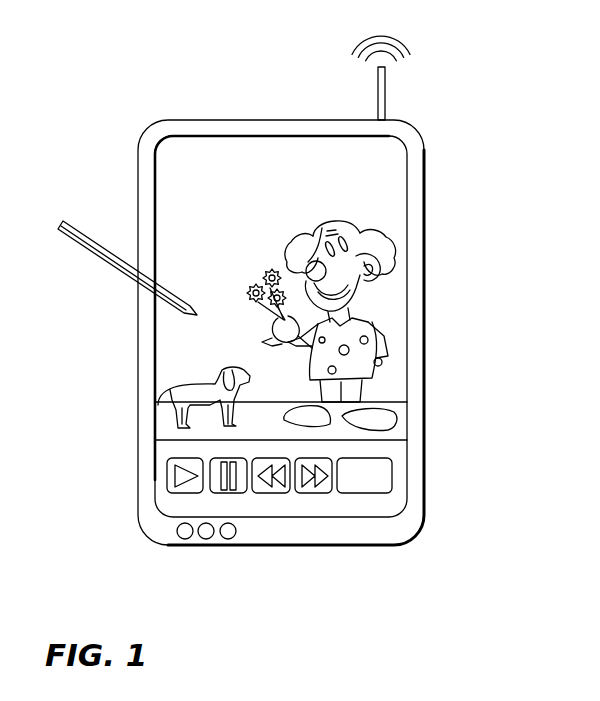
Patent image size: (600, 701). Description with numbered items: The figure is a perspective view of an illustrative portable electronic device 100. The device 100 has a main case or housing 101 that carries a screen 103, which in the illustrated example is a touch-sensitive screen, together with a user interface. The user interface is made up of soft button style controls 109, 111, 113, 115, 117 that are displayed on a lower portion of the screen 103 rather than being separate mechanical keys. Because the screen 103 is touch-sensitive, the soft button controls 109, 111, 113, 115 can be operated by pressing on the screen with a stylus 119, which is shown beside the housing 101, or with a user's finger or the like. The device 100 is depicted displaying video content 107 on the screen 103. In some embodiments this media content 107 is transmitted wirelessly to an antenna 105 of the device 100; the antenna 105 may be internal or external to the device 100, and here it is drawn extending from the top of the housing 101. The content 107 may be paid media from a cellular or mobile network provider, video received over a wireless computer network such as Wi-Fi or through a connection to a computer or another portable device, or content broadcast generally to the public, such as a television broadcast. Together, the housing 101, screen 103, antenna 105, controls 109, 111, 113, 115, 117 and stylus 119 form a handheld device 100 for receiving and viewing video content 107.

The portable electronic device 100 is at (265, 646).
The main case or housing 101 is at (412, 476).
The screen 103 is at (229, 165).
The antenna 105 is at (386, 92).
The video content 107 is at (388, 306).
The soft button control 109 is at (185, 495).
The soft button control 111 is at (230, 495).
The soft button control 113 is at (272, 495).
The soft button control 115 is at (313, 495).
The soft button control 117 is at (363, 495).
The stylus 119 is at (87, 255).